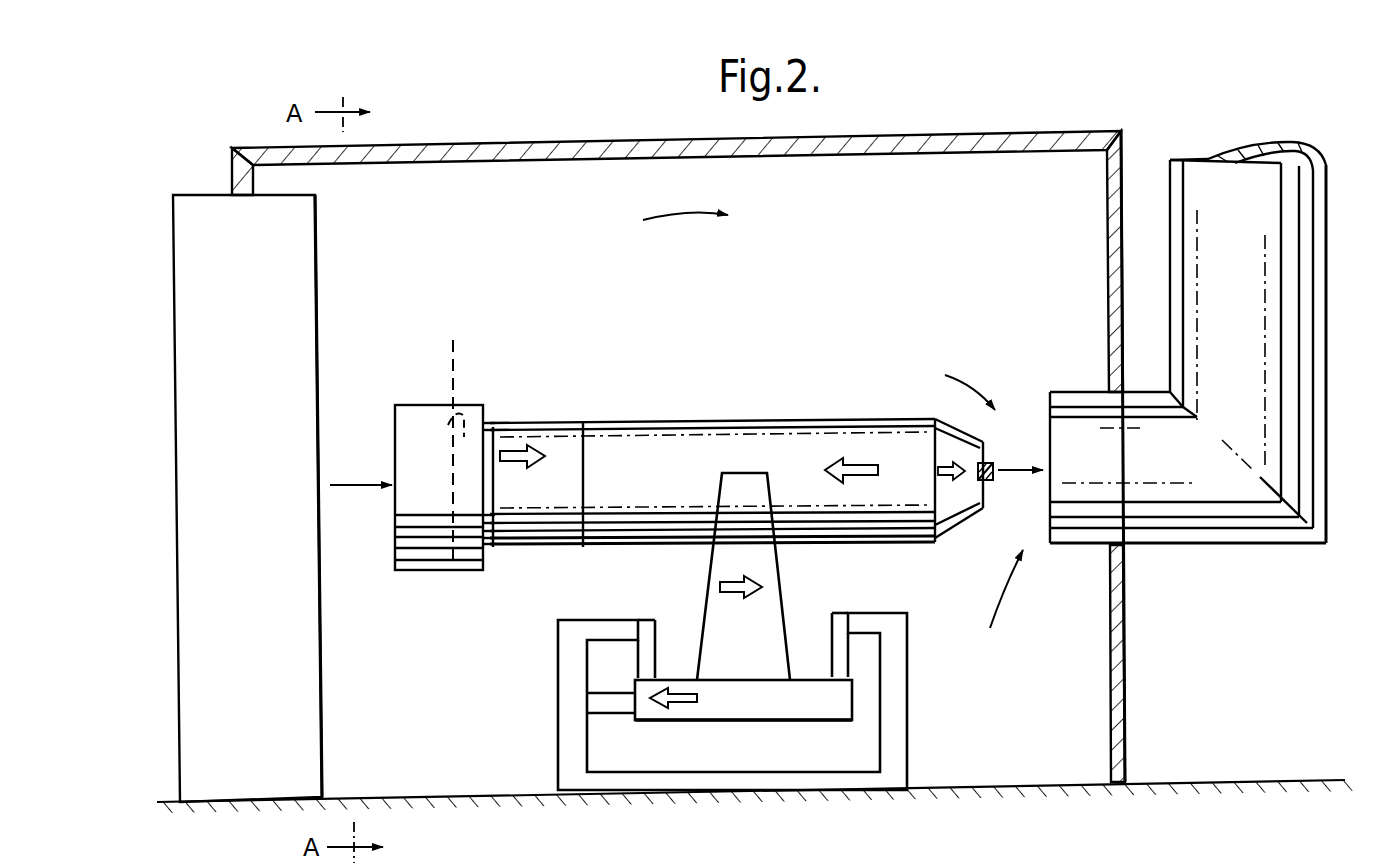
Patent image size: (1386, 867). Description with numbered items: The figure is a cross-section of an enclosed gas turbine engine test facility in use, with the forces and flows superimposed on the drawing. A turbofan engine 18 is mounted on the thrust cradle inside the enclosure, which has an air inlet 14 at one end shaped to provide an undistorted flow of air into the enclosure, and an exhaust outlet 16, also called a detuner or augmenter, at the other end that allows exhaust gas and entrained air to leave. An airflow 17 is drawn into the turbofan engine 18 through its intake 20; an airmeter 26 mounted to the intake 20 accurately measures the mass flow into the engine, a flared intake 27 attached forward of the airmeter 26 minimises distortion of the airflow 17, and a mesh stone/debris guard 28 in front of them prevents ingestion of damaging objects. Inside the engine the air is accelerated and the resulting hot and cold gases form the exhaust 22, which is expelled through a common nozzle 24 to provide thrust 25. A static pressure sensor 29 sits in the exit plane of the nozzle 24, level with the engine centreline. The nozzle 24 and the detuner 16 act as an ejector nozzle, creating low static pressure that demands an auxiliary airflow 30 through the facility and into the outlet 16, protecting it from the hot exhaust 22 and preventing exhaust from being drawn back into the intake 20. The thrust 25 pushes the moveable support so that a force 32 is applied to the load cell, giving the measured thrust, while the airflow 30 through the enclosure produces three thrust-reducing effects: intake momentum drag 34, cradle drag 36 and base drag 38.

The air inlet 14 is at (248, 331).
The exhaust outlet 16 is at (1088, 437).
The airflow 17 is at (361, 469).
The turbofan engine 18 is at (695, 443).
The intake 20 is at (583, 423).
The exhaust 22 is at (1008, 470).
The nozzle 24 is at (957, 513).
The thrust 25 is at (856, 458).
The airmeter 26 is at (512, 423).
The flared intake 27 is at (458, 449).
The stone/debris guard 28 is at (408, 404).
The static pressure sensor 29 is at (993, 483).
The auxiliary airflow 30 is at (709, 214).
The force 32 is at (732, 701).
The intake momentum drag 34 is at (522, 471).
The cradle drag 36 is at (743, 576).
The base drag 38 is at (937, 463).